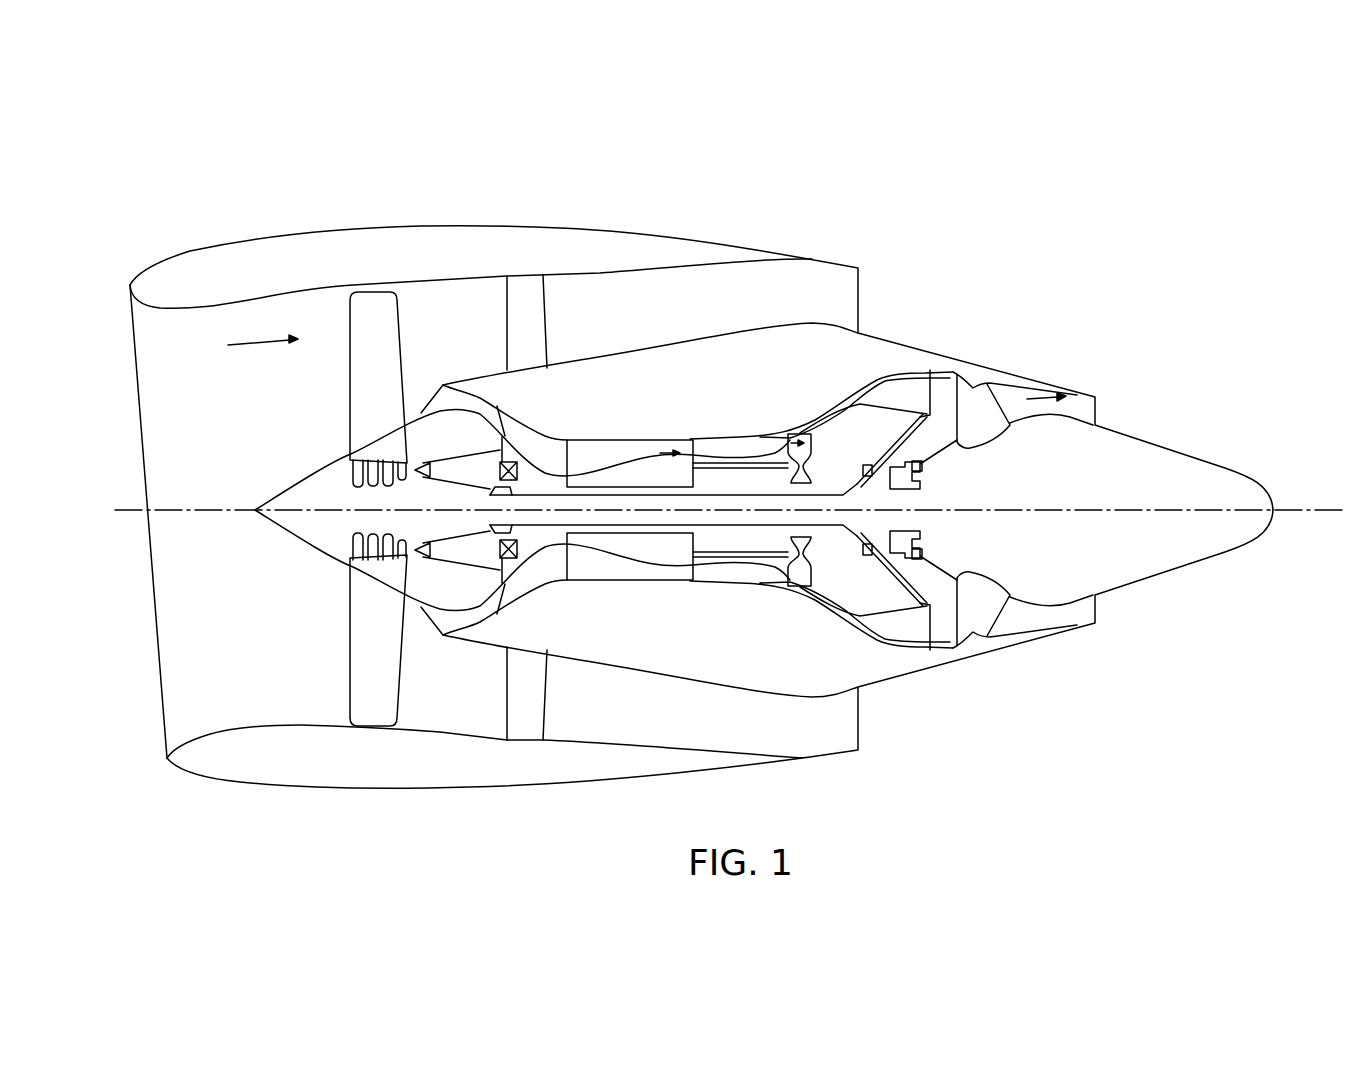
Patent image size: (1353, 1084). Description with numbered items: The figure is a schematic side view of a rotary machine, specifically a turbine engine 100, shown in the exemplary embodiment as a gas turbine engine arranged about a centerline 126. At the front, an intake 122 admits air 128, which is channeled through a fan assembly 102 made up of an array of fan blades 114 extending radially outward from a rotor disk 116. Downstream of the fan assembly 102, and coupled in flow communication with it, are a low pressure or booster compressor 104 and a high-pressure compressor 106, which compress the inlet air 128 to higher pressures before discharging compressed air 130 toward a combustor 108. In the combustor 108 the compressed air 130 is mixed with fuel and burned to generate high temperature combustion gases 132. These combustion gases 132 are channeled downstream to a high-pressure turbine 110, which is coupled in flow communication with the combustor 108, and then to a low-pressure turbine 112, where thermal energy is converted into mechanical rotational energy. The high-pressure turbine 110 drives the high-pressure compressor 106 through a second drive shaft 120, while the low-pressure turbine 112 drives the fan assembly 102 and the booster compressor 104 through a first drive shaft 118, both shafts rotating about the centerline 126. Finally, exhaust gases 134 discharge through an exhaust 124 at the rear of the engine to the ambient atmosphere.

The turbine engine 100 is at (993, 184).
The fan assembly 102 is at (292, 426).
The booster compressor 104 is at (445, 382).
The high-pressure compressor 106 is at (590, 448).
The combustor 108 is at (740, 449).
The high-pressure turbine 110 is at (794, 585).
The low-pressure turbine 112 is at (857, 400).
The fan blades 114 is at (397, 355).
The rotor disk 116 is at (347, 460).
The first drive shaft 118 is at (541, 520).
The second drive shaft 120 is at (712, 477).
The intake 122 is at (156, 335).
The exhaust 124 is at (1112, 418).
The centerline 126 is at (1300, 508).
The air 128 is at (256, 345).
The compressed air 130 is at (657, 450).
The combustion gases 132 is at (783, 432).
The exhaust gases 134 is at (1042, 395).